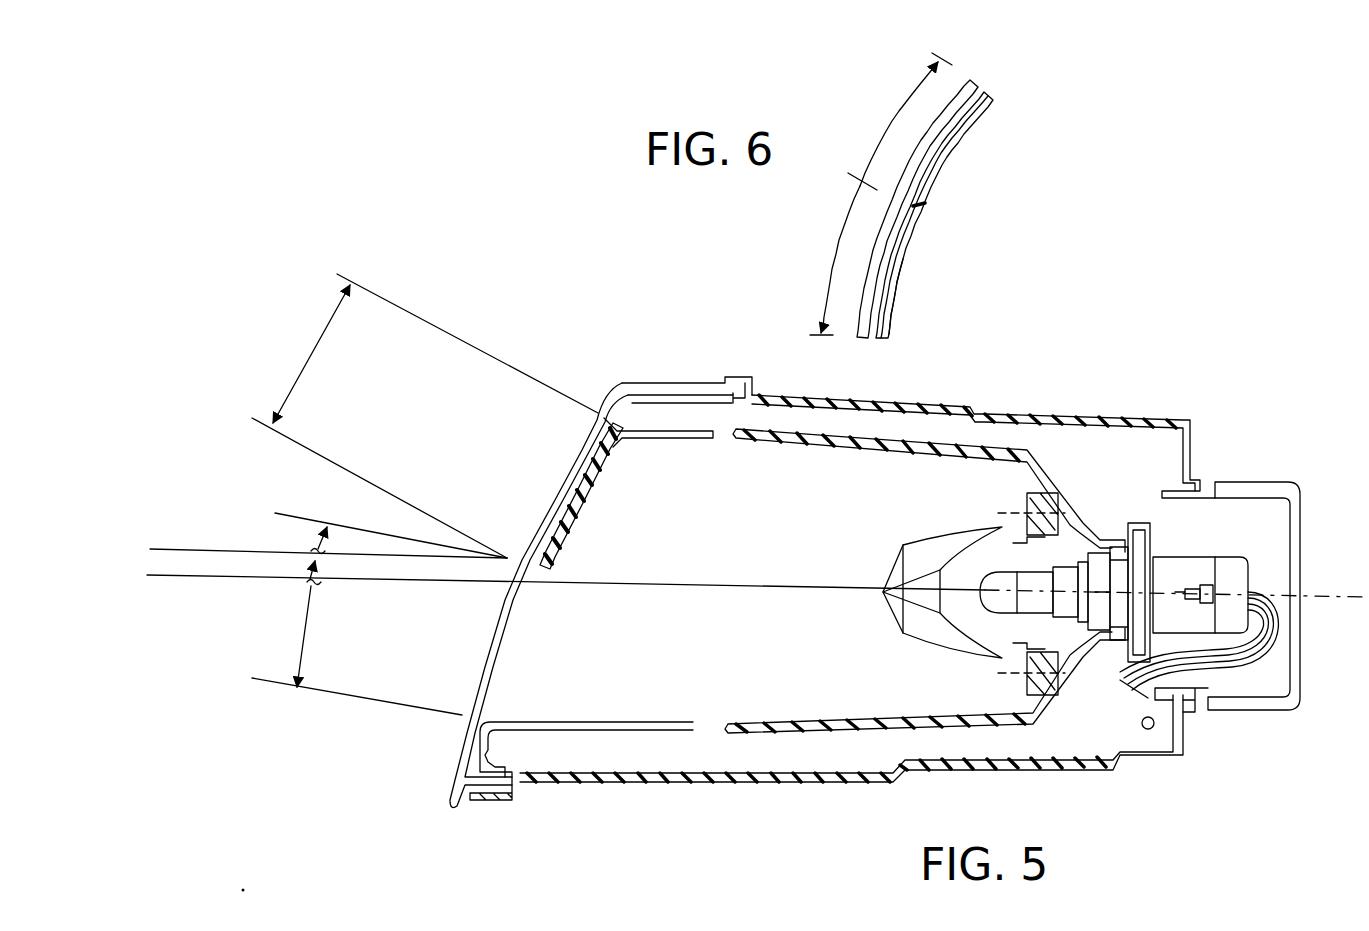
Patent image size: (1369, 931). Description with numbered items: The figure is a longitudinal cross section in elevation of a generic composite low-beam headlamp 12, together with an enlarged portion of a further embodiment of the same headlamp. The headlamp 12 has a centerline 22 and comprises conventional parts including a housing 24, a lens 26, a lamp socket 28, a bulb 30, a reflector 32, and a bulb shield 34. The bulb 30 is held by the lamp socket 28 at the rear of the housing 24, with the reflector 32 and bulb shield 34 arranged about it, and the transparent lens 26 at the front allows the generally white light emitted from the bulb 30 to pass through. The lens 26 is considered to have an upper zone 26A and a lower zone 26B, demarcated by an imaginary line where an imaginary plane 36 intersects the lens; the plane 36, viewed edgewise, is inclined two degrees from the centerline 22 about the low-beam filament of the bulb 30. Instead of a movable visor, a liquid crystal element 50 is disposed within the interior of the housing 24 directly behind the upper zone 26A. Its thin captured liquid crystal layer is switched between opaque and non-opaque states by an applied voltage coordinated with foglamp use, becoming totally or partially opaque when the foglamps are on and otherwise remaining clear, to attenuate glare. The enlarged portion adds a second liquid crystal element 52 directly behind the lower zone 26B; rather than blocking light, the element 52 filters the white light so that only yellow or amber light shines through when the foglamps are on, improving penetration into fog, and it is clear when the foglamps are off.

In FIG. 5, the headlamp 12 is at (773, 386).
In FIG. 5, the centerline 22 is at (263, 579).
In FIG. 5, the housing 24 is at (667, 778).
In FIG. 5, the lens 26 is at (483, 658).
In FIG. 6, the lens 26 is at (972, 80).
In FIG. 5, the upper zone 26A is at (313, 357).
In FIG. 6, the upper zone 26A is at (902, 107).
In FIG. 5, the lower zone 26B is at (303, 625).
In FIG. 6, the lower zone 26B is at (835, 247).
In FIG. 5, the lamp socket 28 is at (1227, 557).
In FIG. 5, the bulb 30 is at (1037, 580).
In FIG. 5, the reflector 32 is at (863, 437).
In FIG. 5, the bulb shield 34 is at (938, 537).
In FIG. 5, the imaginary plane 36 is at (203, 549).
In FIG. 5, the liquid crystal element 50 is at (583, 498).
In FIG. 6, the liquid crystal element 50 is at (963, 133).
In FIG. 6, the second liquid crystal element 52 is at (895, 290).